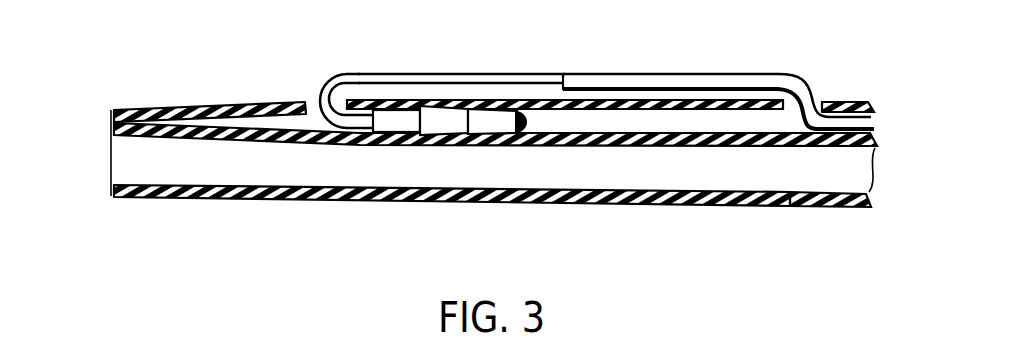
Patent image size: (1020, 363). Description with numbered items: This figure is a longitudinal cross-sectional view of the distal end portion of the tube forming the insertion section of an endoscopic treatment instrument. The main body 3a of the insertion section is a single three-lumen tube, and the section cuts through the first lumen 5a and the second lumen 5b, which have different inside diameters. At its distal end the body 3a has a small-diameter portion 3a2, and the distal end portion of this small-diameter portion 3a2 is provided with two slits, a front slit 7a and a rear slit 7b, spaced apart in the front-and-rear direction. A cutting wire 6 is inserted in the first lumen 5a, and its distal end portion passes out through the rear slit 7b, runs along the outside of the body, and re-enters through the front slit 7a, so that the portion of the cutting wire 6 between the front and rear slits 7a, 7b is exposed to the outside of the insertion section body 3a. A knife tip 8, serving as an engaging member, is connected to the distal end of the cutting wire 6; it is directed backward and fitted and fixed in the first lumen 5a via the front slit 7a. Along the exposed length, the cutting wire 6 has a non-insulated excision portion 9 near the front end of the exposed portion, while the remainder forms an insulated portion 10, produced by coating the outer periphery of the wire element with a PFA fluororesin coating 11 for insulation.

The main body of the insertion section 3a is at (845, 216).
The small-diameter portion 3a2 is at (745, 208).
The first lumen 5a is at (730, 122).
The second lumen 5b is at (582, 191).
The cutting wire 6 is at (421, 78).
The front slit 7a is at (308, 98).
The rear slit 7b is at (820, 102).
The knife tip 8 is at (445, 125).
The excision portion 9 is at (491, 75).
The insulated portion 10 is at (584, 76).
The fluororesin coating 11 is at (668, 73).